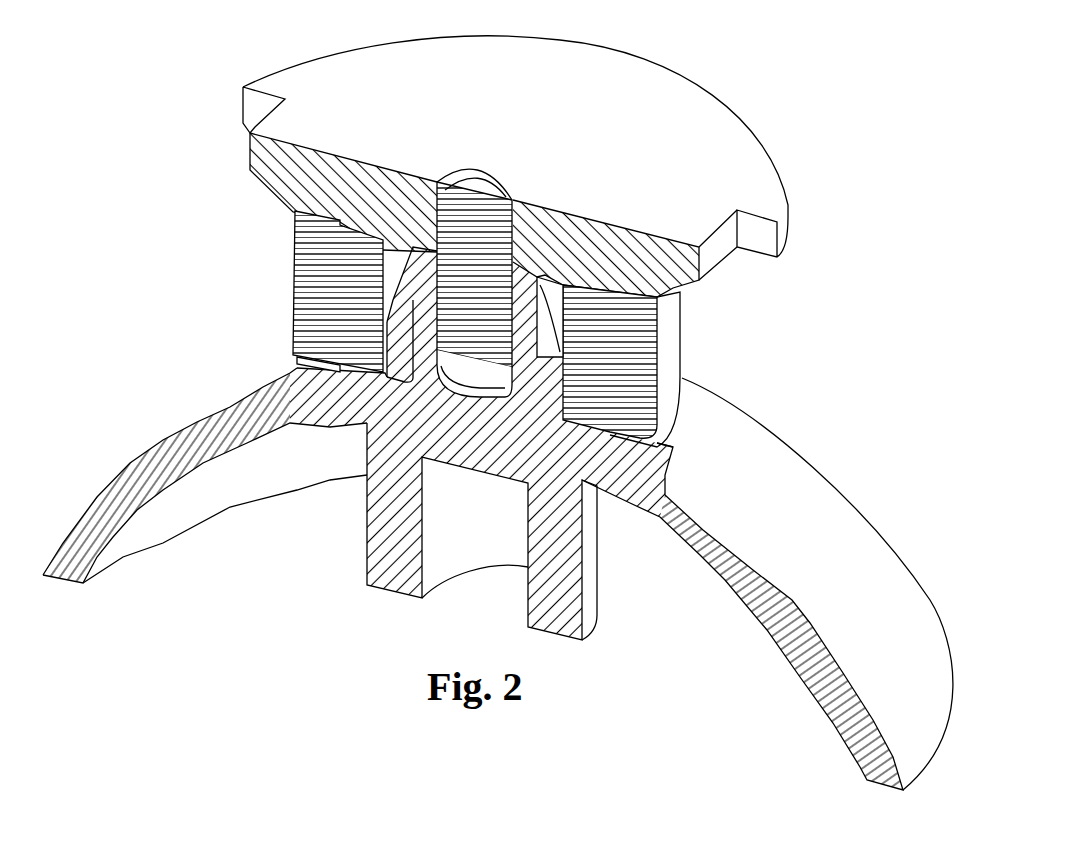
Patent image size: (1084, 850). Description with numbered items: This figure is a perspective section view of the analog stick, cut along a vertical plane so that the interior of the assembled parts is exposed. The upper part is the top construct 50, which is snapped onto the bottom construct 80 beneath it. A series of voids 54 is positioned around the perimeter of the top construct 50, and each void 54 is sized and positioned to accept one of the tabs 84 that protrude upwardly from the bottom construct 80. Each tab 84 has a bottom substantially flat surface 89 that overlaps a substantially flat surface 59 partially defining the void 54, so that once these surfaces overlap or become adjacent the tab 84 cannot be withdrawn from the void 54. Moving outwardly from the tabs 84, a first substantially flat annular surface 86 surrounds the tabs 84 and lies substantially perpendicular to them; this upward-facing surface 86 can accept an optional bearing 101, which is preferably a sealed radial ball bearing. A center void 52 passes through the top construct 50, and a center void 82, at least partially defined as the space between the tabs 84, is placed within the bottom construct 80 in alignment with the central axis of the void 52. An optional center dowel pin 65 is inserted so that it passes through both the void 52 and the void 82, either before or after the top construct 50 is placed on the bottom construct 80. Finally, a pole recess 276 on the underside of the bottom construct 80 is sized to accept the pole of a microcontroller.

The top construct 50 is at (682, 100).
The center void 52 is at (493, 198).
The voids 54 is at (400, 267).
The substantially flat surface 59 is at (548, 368).
The center dowel pin 65 is at (476, 197).
The bottom construct 80 is at (817, 488).
The center void 82 is at (475, 376).
The tabs 84 is at (600, 316).
The first substantially flat annular surface 86 is at (303, 357).
The bottom substantially flat surface 89 is at (430, 350).
The bearing 101 is at (307, 330).
The pole recess 276 is at (445, 560).